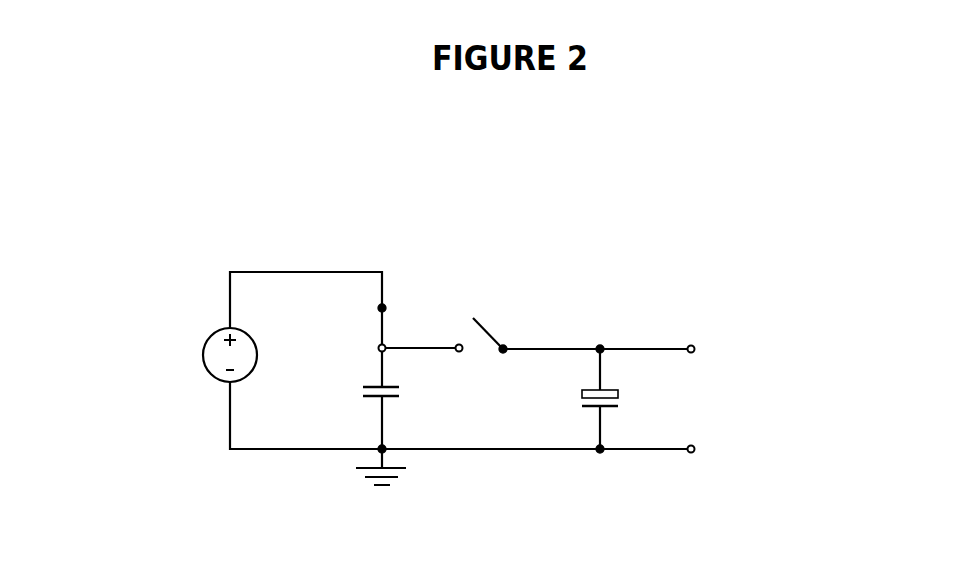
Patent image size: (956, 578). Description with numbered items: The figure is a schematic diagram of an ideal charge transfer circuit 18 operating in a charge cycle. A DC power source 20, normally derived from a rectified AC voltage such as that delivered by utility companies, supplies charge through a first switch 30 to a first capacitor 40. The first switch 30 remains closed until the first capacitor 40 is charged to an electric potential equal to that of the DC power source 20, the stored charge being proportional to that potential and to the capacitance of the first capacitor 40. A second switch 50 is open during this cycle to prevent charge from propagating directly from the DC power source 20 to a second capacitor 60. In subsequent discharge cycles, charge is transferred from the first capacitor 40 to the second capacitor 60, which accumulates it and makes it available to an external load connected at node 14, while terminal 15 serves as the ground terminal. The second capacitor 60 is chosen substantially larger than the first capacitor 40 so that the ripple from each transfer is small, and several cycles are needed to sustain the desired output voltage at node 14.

The node 14 is at (698, 348).
The terminal 15 is at (698, 450).
The ideal charge transfer circuit 18 is at (559, 242).
The DC power source 20 is at (198, 355).
The first switch 30 is at (377, 328).
The first capacitor 40 is at (393, 402).
The second switch 50 is at (495, 330).
The second capacitor 60 is at (578, 393).